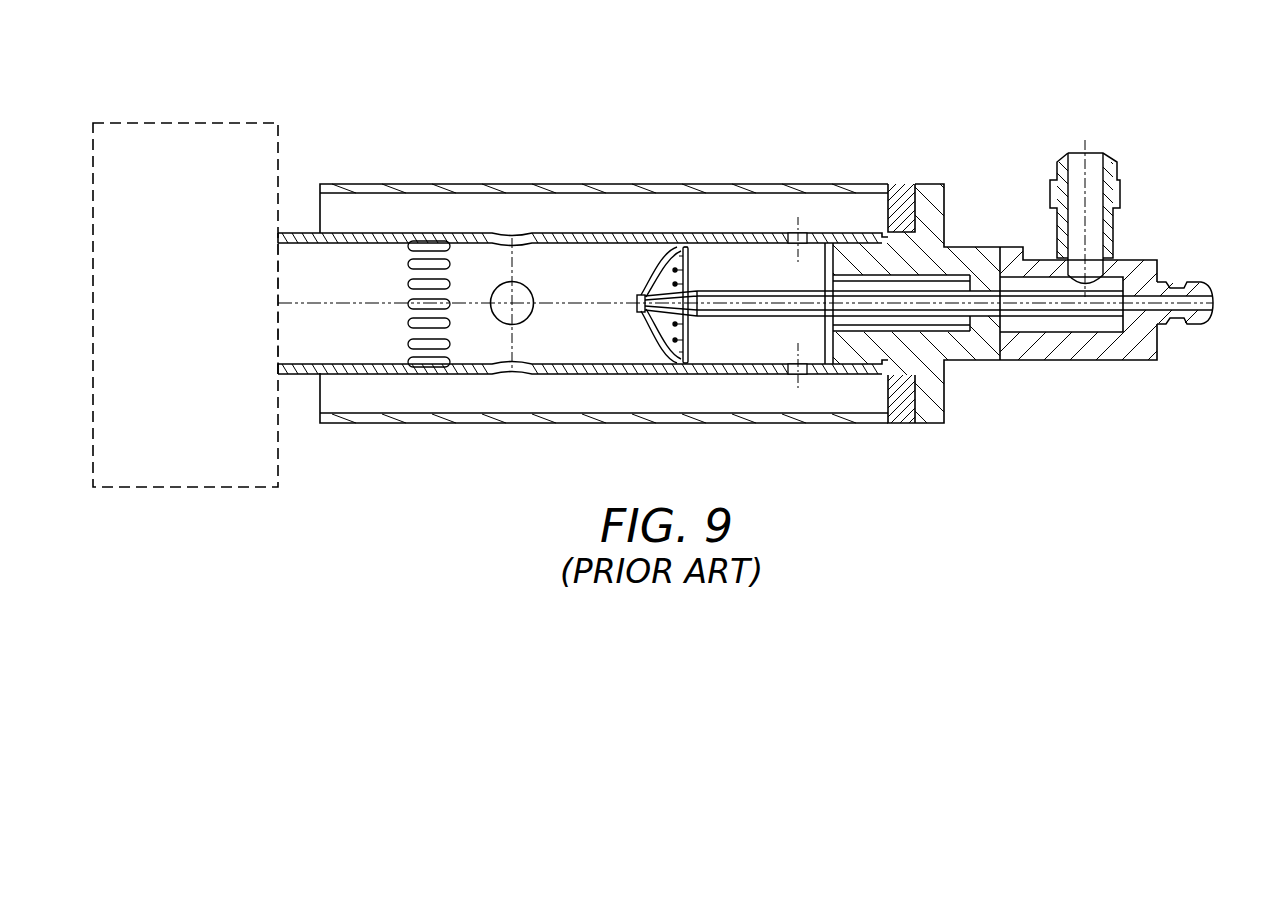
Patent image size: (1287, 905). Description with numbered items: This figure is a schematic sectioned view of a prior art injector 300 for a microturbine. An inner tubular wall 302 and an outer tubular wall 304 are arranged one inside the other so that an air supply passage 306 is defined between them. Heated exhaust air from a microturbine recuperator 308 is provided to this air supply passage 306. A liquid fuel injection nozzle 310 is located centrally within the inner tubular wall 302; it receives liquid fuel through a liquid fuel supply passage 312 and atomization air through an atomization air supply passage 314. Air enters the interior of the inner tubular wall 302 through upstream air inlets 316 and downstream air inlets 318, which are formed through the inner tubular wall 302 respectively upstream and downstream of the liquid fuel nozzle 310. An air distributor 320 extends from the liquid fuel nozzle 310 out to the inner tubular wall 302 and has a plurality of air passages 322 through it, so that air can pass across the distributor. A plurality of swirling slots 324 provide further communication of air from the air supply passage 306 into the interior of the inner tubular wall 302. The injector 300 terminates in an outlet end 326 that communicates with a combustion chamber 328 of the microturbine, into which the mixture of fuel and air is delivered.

The prior art injector 300 is at (702, 99).
The inner tubular wall 302 is at (390, 233).
The outer tubular wall 304 is at (456, 184).
The air supply passage 306 is at (592, 214).
The microturbine recuperator 308 is at (343, 221).
The liquid fuel injection nozzle 310 is at (643, 312).
The liquid fuel supply passage 312 is at (1214, 303).
The atomization air supply passage 314 is at (1096, 165).
The upstream air inlets 316 is at (805, 228).
The downstream air inlets 318 is at (516, 240).
The air distributor 320 is at (690, 257).
The air passages 322 is at (690, 323).
The swirling slots 324 is at (408, 344).
The outlet end 326 is at (278, 340).
The combustion chamber 328 is at (187, 263).